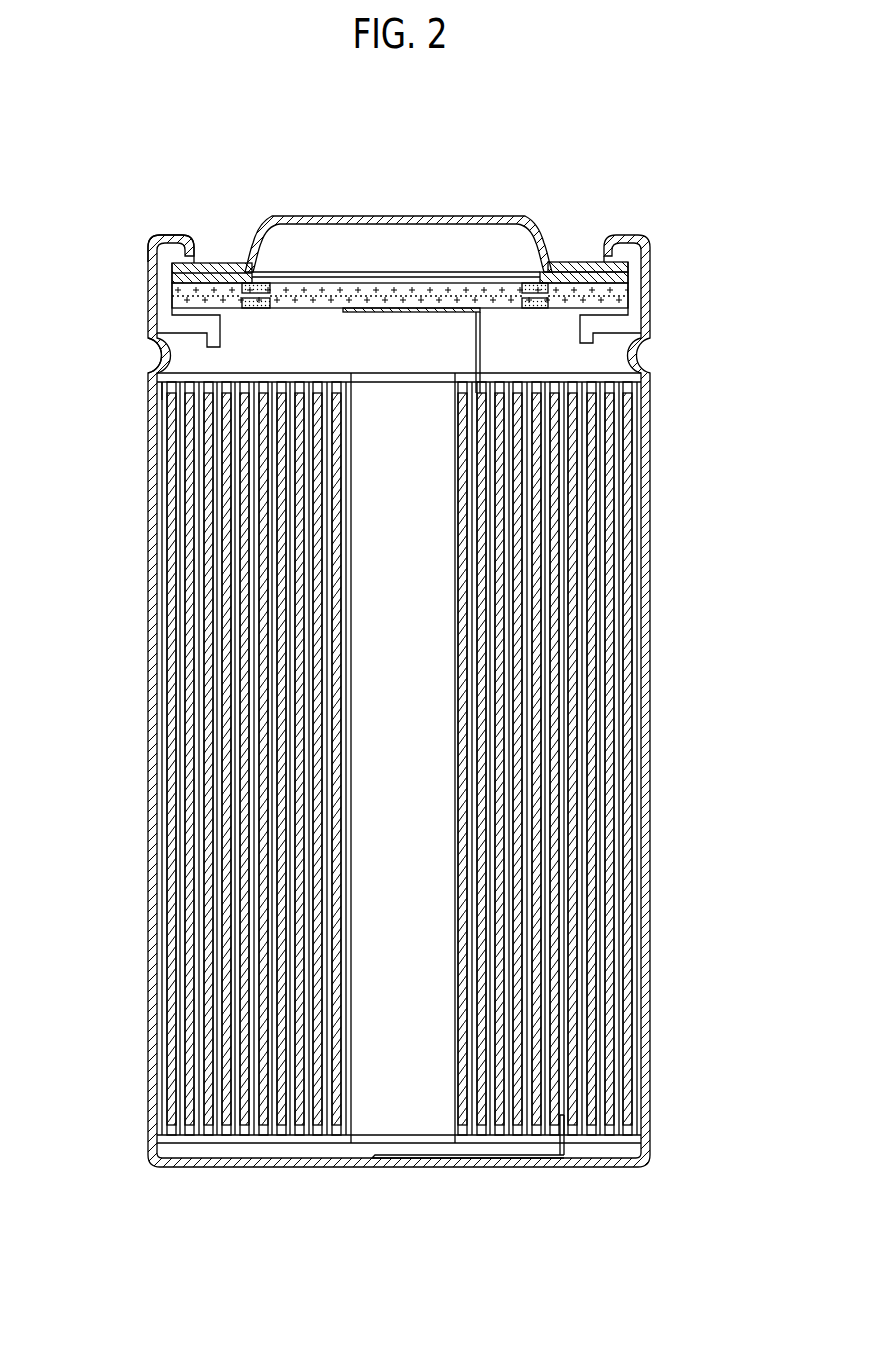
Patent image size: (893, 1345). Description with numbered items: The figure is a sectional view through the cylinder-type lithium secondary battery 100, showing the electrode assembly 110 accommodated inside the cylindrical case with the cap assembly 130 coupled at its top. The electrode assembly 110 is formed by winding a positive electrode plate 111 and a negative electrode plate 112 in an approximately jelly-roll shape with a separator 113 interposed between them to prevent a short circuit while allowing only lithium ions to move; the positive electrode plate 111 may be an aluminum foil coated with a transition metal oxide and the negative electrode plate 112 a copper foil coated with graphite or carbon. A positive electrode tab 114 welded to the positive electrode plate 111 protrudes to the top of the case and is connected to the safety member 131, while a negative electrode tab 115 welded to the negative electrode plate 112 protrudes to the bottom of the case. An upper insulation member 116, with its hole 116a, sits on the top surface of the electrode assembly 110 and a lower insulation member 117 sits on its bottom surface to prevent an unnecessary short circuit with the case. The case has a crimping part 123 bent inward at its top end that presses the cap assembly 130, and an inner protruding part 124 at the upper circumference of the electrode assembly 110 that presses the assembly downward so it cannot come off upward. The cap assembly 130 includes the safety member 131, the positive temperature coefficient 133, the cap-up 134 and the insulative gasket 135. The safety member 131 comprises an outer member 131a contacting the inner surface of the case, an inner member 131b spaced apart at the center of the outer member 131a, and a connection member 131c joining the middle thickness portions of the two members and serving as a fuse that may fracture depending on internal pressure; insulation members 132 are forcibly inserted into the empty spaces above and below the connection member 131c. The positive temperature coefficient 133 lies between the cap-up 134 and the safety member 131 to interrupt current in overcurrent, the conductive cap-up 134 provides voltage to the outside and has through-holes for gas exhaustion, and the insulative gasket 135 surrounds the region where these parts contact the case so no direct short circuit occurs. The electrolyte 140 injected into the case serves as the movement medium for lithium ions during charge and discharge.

The cylinder-type lithium secondary battery 100 is at (694, 188).
The electrode assembly 110 is at (732, 423).
The positive electrode plate 111 is at (602, 527).
The negative electrode plate 112 is at (622, 438).
The separator 113 is at (612, 482).
The positive electrode tab 114 is at (483, 350).
The negative electrode tab 115 is at (566, 1152).
The upper insulation member 116 is at (230, 378).
The hole of upper insulating plate 116a is at (163, 397).
The lower insulation member 117 is at (641, 1140).
The crimping part 123 is at (150, 247).
The inner protruding part 124 is at (161, 352).
The cap assembly 130 is at (558, 162).
The safety member 131 is at (724, 270).
The outer member 131a is at (623, 290).
The inner member 131b is at (507, 302).
The connection member 131c is at (545, 300).
The insulation member 132 is at (255, 303).
The positive temperature coefficient 133 is at (220, 263).
The cap-up 134 is at (282, 217).
The insulative gasket 135 is at (623, 247).
The electrolyte 140 is at (404, 1127).